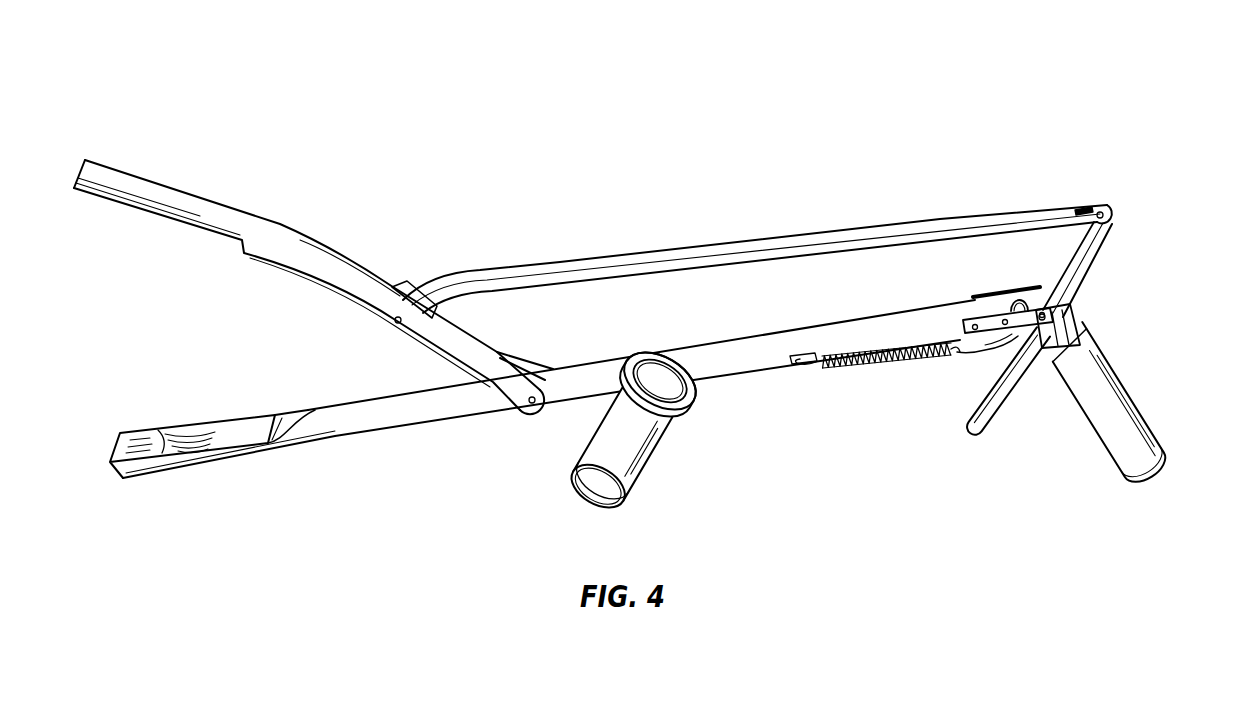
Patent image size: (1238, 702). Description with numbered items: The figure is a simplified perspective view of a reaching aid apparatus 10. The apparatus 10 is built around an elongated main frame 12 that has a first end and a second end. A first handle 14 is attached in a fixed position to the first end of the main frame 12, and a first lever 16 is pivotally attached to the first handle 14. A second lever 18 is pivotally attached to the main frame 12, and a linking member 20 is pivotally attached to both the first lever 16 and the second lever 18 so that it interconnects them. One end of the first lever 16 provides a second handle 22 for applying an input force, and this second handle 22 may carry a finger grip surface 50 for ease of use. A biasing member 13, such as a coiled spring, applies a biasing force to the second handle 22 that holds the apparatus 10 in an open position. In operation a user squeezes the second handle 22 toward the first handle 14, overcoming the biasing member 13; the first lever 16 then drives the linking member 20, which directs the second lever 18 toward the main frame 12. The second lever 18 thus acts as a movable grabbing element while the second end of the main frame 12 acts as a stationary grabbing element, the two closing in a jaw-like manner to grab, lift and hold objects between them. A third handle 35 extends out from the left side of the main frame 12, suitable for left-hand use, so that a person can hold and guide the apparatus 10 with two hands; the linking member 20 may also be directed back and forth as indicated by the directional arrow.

The apparatus 10 is at (1120, 86).
The main frame 12 is at (790, 340).
The biasing member 13 is at (893, 370).
The first handle 14 is at (1130, 388).
The first lever 16 is at (1073, 260).
The second lever 18 is at (343, 262).
The linking member 20 is at (796, 238).
The second handle 22 is at (998, 407).
The third handle 35 is at (653, 452).
The finger grip surface 50 is at (977, 407).